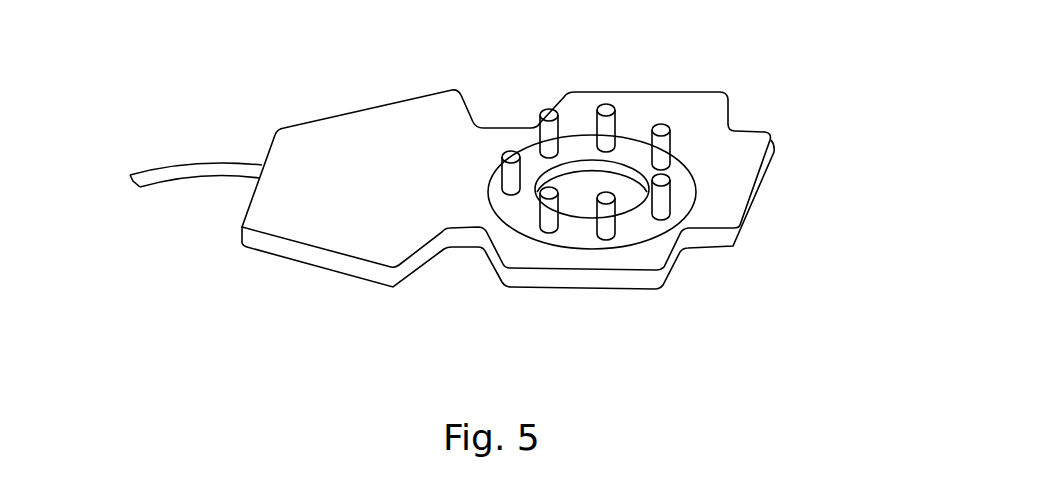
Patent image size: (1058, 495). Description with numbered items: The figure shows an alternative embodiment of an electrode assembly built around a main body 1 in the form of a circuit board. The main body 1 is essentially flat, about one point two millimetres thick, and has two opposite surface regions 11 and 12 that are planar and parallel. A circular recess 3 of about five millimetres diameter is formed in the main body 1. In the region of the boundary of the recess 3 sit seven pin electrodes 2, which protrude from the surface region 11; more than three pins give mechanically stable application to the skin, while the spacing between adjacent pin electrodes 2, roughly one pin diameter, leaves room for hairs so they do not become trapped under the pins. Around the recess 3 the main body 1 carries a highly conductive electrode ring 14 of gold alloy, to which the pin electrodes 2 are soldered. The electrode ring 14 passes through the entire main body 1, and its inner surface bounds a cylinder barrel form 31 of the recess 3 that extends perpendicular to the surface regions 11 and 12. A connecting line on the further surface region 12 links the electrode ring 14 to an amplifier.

The main body 1 is at (495, 160).
The surface region 11 is at (740, 167).
The surface region 12 is at (750, 228).
The electrode ring 14 is at (507, 212).
The pin electrodes 2 is at (667, 130).
The recess 3 is at (592, 195).
The cylinder barrel form 31 is at (592, 158).